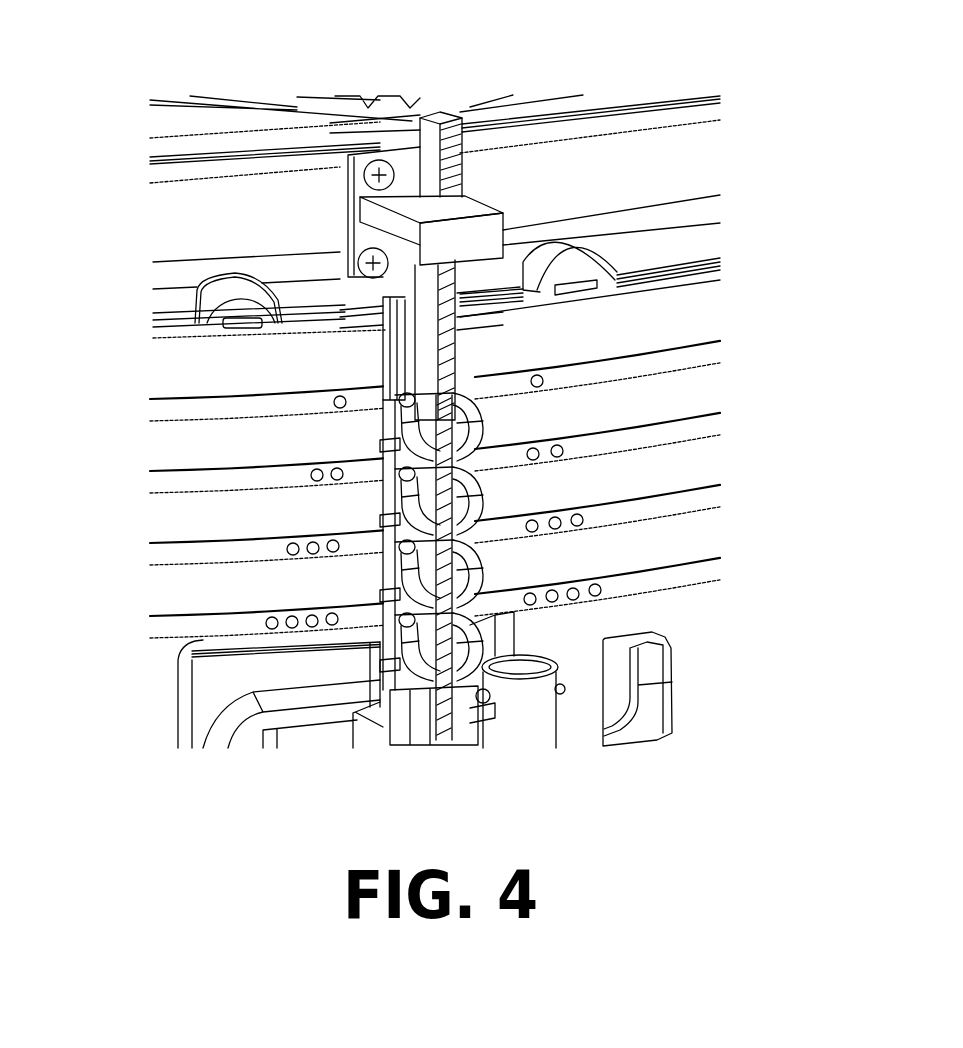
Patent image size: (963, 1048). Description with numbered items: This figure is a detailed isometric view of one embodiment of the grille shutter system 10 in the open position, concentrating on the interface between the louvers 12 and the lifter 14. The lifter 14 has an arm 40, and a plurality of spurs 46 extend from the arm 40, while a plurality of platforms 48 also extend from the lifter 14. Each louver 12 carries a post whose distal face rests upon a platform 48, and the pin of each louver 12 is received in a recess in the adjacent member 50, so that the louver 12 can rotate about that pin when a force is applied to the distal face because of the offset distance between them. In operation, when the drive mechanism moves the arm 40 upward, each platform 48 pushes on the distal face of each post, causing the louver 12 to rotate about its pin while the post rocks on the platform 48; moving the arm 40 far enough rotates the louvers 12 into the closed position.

The shutter system 10 is at (507, 187).
The louver 12 is at (690, 430).
The lifter 14 is at (435, 158).
The arm 40 is at (447, 340).
The spur 46 is at (458, 463).
The platform 48 is at (397, 517).
The adjacent member 50 is at (383, 355).